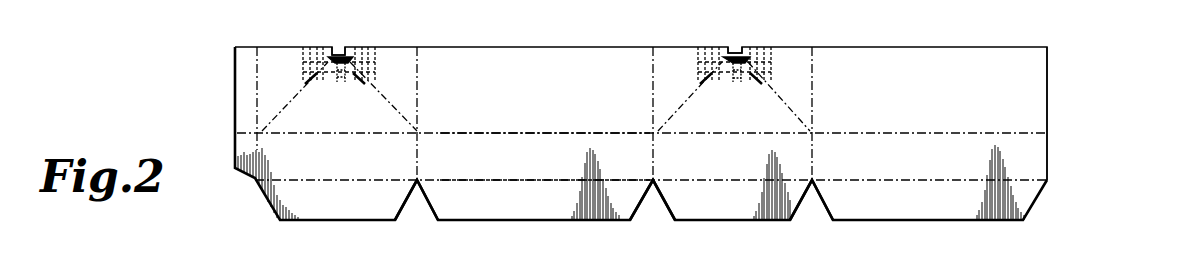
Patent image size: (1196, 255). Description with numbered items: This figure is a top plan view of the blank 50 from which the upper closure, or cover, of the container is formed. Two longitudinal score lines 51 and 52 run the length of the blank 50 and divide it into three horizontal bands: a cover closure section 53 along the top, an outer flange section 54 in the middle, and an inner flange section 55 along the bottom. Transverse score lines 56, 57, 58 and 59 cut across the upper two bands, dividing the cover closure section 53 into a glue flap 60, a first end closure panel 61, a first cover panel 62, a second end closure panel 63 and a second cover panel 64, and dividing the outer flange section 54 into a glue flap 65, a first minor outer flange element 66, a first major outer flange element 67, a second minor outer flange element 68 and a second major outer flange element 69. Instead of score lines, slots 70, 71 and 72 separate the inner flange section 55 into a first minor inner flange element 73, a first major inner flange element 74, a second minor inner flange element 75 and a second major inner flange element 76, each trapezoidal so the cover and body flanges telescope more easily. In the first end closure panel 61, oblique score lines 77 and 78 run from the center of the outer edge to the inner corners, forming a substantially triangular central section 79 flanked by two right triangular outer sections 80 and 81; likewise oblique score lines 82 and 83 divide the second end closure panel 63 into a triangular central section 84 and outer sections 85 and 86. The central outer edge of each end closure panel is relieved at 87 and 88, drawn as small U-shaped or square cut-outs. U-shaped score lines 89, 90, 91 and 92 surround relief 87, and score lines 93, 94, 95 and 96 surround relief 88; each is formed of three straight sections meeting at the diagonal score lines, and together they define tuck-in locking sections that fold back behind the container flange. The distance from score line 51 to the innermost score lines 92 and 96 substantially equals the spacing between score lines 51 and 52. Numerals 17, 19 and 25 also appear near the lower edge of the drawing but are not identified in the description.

The bottom edge portion 17 is at (626, 254).
The bottom edge portion 19 is at (1003, 253).
The tab 25 is at (403, 250).
The blank 50 is at (180, 88).
The longitudinal score line 51 is at (480, 133).
The longitudinal score line 52 is at (440, 180).
The cover closure section 53 is at (1073, 78).
The outer flange section 54 is at (1060, 157).
The inner flange section 55 is at (1053, 205).
The score line 56 is at (257, 66).
The score line 57 is at (418, 110).
The score line 58 is at (653, 97).
The score line 59 is at (812, 115).
The glue flap 60 is at (235, 108).
The first end closure panel 61 is at (314, 42).
The first cover panel 62 is at (551, 82).
The second end closure panel 63 is at (700, 43).
The second cover panel 64 is at (939, 92).
The glue flap 65 is at (245, 148).
The first minor outer flange element 66 is at (359, 169).
The first major outer flange element 67 is at (546, 167).
The second minor outer flange element 68 is at (767, 167).
The second major outer flange element 69 is at (932, 167).
The slot 70 is at (415, 208).
The slot 71 is at (655, 207).
The slot 72 is at (810, 208).
The first minor inner flange element 73 is at (351, 210).
The first major inner flange element 74 is at (544, 210).
The second minor inner flange element 75 is at (744, 210).
The second major inner flange element 76 is at (936, 212).
The oblique score line 77 is at (300, 97).
The oblique score line 78 is at (395, 104).
The triangular central section 79 is at (311, 129).
The right triangular outer section 80 is at (292, 74).
The right triangular outer section 81 is at (407, 74).
The oblique score line 82 is at (694, 97).
The oblique score line 83 is at (795, 103).
The triangular central section 84 is at (704, 129).
The right triangular outer section 85 is at (687, 74).
The right triangular outer section 86 is at (806, 74).
The relief 87 is at (340, 50).
The relief 88 is at (735, 50).
The U-shaped score line 89 is at (330, 82).
The U-shaped score line 90 is at (341, 82).
The U-shaped score line 91 is at (347, 82).
The U-shaped score line 92 is at (355, 85).
The U-shaped score line 93 is at (728, 82).
The U-shaped score line 94 is at (735, 82).
The U-shaped score line 95 is at (742, 82).
The U-shaped score line 96 is at (750, 85).